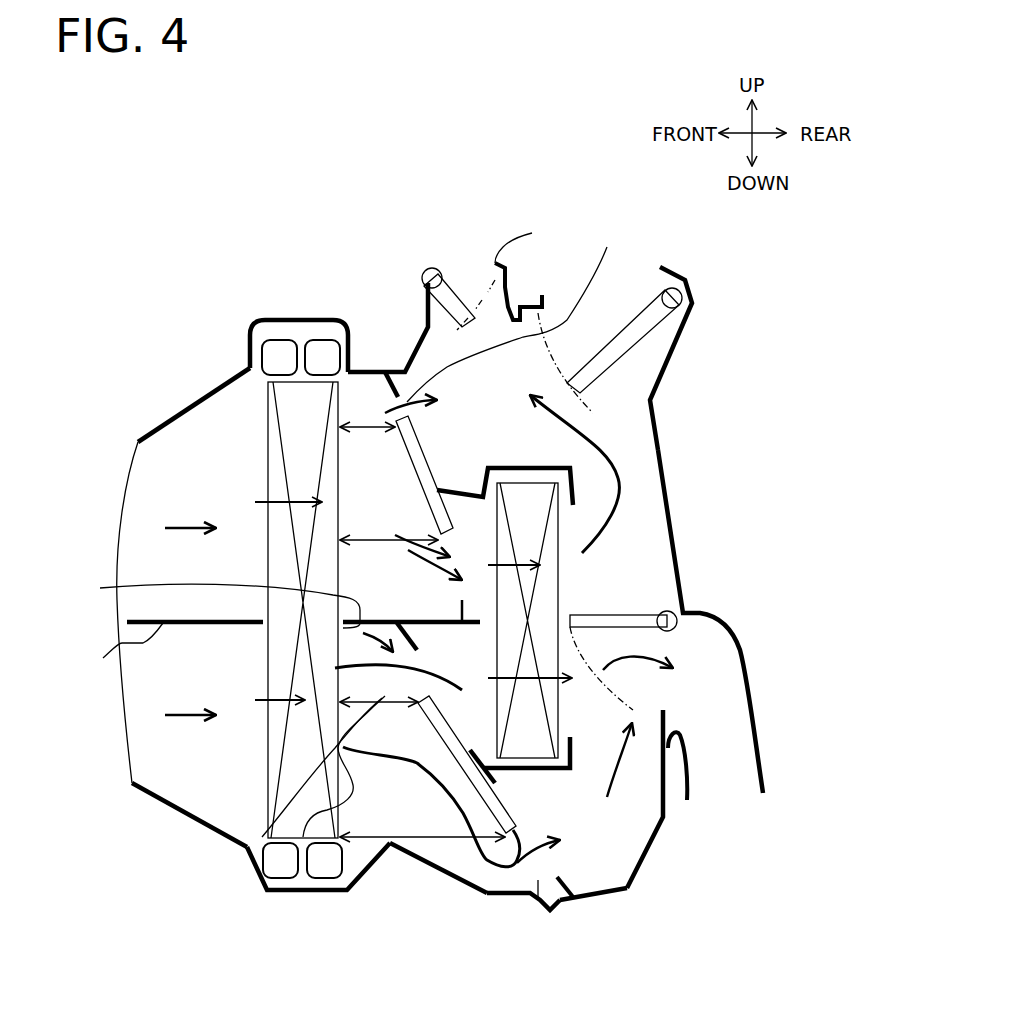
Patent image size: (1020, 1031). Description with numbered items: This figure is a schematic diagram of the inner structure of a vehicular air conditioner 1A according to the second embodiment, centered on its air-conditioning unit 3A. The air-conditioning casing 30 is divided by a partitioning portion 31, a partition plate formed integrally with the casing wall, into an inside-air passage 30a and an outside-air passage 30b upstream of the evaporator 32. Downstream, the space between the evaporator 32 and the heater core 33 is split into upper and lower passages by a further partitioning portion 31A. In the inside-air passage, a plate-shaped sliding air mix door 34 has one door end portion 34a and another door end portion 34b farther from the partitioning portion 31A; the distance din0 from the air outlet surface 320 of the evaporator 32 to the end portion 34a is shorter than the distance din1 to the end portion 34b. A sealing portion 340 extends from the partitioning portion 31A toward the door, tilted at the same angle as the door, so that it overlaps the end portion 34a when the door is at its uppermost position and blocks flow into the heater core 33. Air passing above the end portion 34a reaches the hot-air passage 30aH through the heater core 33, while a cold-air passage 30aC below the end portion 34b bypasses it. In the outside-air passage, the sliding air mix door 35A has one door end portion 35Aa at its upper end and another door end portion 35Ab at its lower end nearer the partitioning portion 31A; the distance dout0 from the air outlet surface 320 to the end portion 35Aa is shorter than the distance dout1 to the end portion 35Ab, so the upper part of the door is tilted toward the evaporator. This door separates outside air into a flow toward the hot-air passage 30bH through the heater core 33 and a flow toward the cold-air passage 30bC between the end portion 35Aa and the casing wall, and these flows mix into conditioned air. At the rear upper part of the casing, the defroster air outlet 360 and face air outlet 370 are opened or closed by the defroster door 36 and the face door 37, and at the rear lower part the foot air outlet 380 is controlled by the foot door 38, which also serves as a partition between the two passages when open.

The vehicular air conditioner 1A is at (433, 248).
The air-conditioning unit 3A is at (347, 317).
The air-conditioning casing 30 is at (202, 827).
The inside-air passage 30a is at (177, 785).
The outside-air passage 30b is at (158, 443).
The cold-air passage 30aC is at (540, 908).
The hot-air passage 30aH is at (576, 740).
The cold-air passage 30bC is at (523, 317).
The hot-air passage 30bH is at (587, 563).
The partitioning portion 31 is at (103, 658).
The partitioning portion 31A is at (100, 588).
The evaporator 32 is at (262, 426).
The air outlet surface 320 is at (303, 848).
The heater core 33 is at (572, 713).
The air mix door 34 is at (481, 803).
The one door end portion 34a is at (423, 700).
The other door end portion 34b is at (520, 867).
The sealing portion 340 is at (333, 628).
The air mix door 35A is at (424, 460).
The one door end portion 35Aa is at (398, 426).
The other door end portion 35Ab is at (445, 537).
The defroster door 36 is at (447, 292).
The defroster air outlet 360 is at (540, 230).
The face door 37 is at (617, 348).
The face air outlet 370 is at (647, 260).
The foot door 38 is at (617, 620).
The foot air outlet 380 is at (665, 708).
The distance din0 is at (267, 838).
The distance din1 is at (377, 840).
The distance dout0 is at (358, 427).
The distance dout1 is at (370, 537).